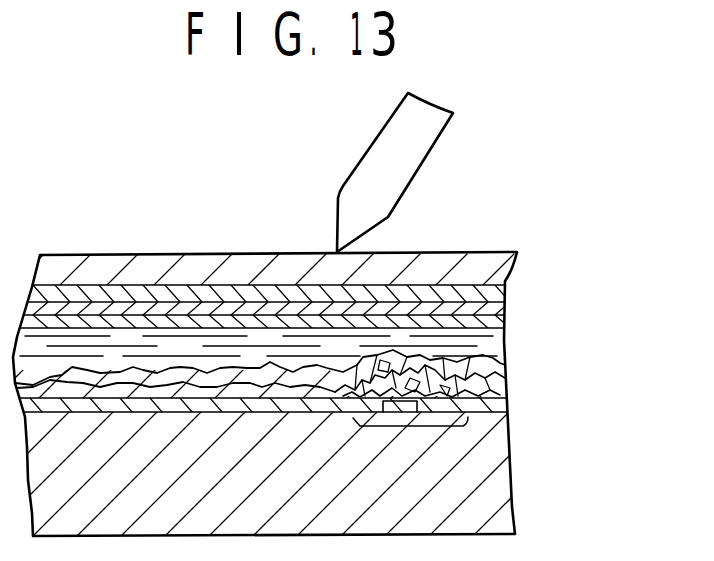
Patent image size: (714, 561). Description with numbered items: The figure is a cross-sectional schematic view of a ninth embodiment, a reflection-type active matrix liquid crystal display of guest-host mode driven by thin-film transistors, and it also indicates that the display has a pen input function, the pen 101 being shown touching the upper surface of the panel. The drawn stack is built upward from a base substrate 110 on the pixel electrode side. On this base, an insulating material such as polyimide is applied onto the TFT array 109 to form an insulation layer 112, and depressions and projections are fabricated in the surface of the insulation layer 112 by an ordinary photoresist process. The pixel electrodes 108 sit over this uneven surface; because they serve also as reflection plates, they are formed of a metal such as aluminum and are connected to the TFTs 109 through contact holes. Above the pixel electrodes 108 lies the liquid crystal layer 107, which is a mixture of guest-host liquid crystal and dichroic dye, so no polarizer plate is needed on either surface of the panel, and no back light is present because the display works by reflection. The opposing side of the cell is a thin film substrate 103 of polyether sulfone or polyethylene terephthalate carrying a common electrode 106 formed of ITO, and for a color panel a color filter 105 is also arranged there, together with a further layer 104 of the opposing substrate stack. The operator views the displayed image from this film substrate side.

The scratch tool / stylus 101 is at (423, 145).
The film substrate 103 is at (490, 250).
The hard coat layer 104 is at (507, 289).
The color filter 105 is at (506, 306).
The common electrode 106 is at (506, 320).
The liquid crystal layer 107 is at (488, 333).
The pixel electrodes 108 is at (495, 362).
The TFT array 109 is at (407, 421).
The substrate 110 is at (498, 495).
The insulation layer 112 is at (493, 390).